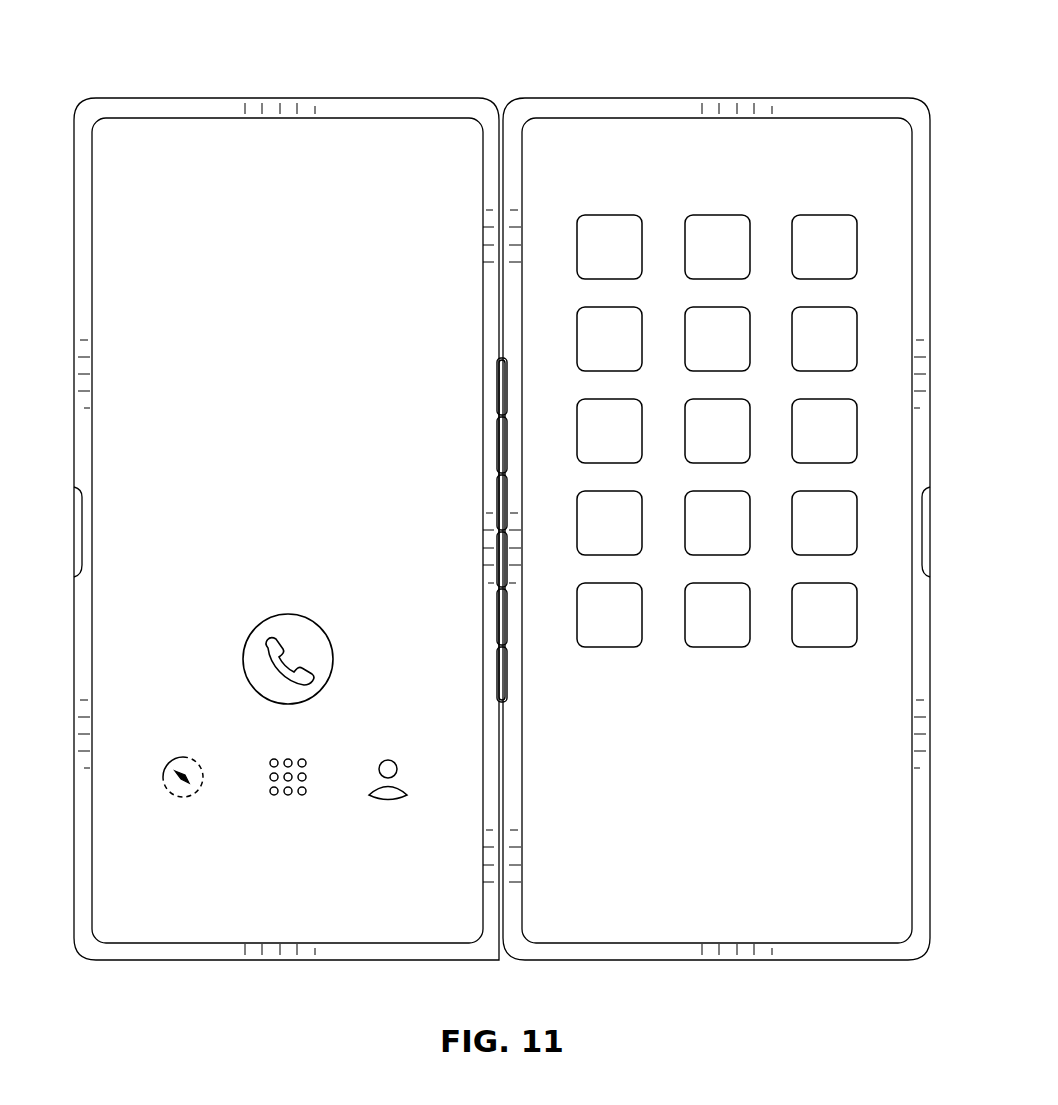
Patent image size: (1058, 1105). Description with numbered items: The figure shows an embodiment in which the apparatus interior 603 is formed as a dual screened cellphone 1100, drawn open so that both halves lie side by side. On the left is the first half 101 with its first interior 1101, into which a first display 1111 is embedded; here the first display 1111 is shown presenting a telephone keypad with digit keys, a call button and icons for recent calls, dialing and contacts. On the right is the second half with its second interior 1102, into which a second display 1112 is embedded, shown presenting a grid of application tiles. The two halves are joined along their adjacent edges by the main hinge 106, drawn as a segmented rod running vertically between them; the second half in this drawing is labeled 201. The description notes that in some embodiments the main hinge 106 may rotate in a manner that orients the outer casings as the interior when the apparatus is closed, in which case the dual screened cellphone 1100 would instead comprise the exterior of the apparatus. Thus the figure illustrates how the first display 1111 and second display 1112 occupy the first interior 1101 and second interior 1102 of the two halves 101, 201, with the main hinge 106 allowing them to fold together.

The first half 101 is at (84, 361).
The second housing 201 is at (920, 361).
The main hinge 106 is at (499, 360).
The apparatus interior 603 is at (588, 66).
The dual screened cellphone 1100 is at (312, 70).
The first interior 1101 is at (108, 143).
The second interior 1102 is at (871, 143).
The first display 1111 is at (131, 618).
The second display 1112 is at (883, 619).